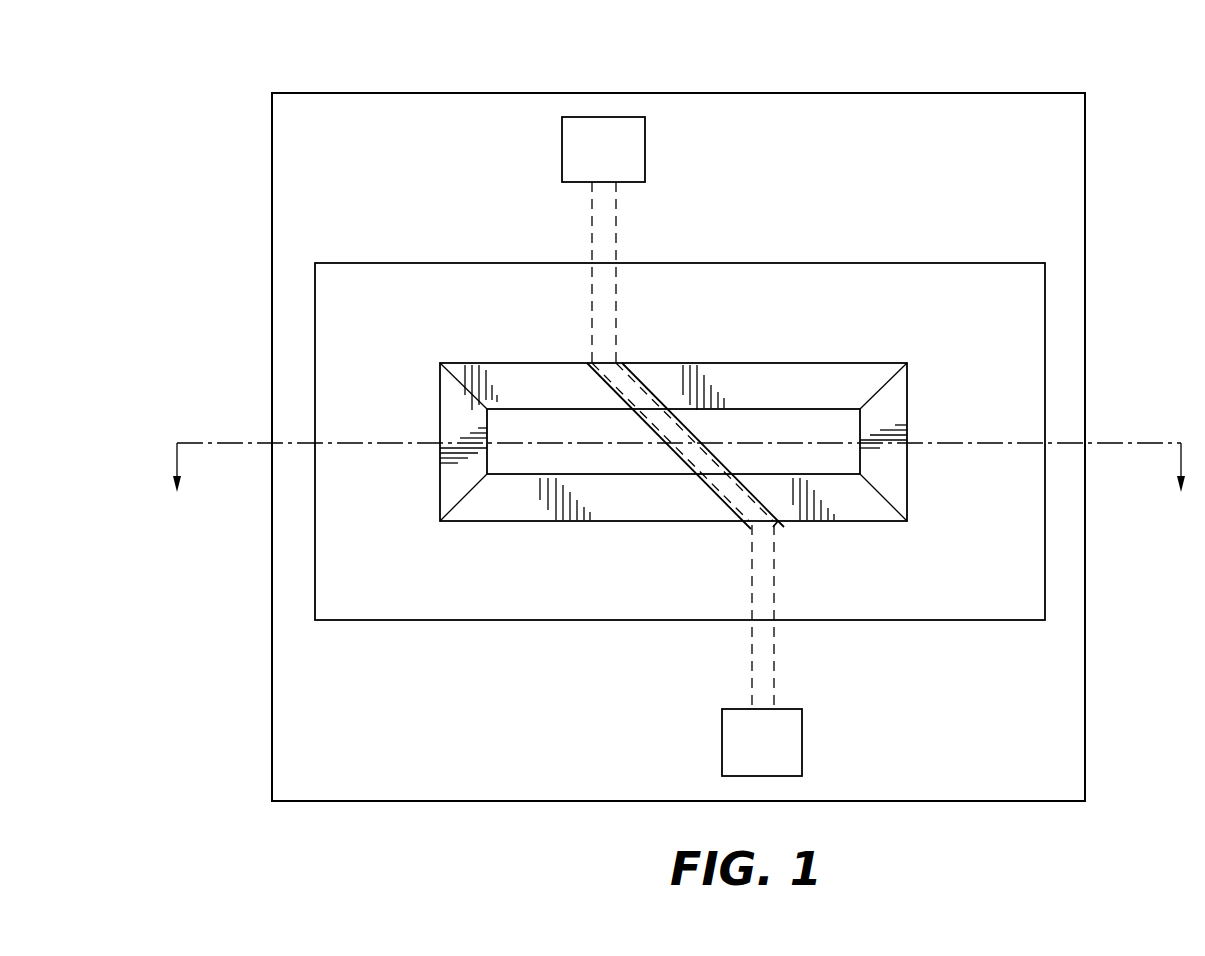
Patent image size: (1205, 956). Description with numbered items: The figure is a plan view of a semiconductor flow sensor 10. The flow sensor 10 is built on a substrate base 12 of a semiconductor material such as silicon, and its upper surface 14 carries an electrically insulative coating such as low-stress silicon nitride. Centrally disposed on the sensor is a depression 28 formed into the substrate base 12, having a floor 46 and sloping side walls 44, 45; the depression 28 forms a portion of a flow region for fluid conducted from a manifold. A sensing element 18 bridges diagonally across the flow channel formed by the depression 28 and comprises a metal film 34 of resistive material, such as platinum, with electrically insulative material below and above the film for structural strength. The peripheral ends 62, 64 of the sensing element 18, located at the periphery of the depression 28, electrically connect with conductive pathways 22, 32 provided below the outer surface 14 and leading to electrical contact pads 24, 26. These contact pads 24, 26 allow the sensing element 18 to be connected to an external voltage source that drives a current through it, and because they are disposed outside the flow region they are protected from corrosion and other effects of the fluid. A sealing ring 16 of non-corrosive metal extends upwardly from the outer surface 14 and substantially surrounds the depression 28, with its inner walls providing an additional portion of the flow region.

The semiconductor flow sensor 10 is at (196, 109).
The substrate base 12 is at (358, 93).
The upper surface 14 is at (974, 146).
The sealing ring 16 is at (1018, 340).
The sensing element 18 is at (698, 437).
The conductive pathway 22 is at (592, 233).
The electrical contact pad 24 is at (598, 135).
The electrical contact pad 26 is at (775, 745).
The depression 28 is at (554, 455).
The conductive pathway 32 is at (775, 655).
The metal film 34 is at (726, 479).
The sloping side wall 44 is at (455, 403).
The sloping side wall 45 is at (528, 380).
The floor 46 is at (525, 465).
The peripheral end 62 is at (603, 358).
The peripheral end 64 is at (770, 520).